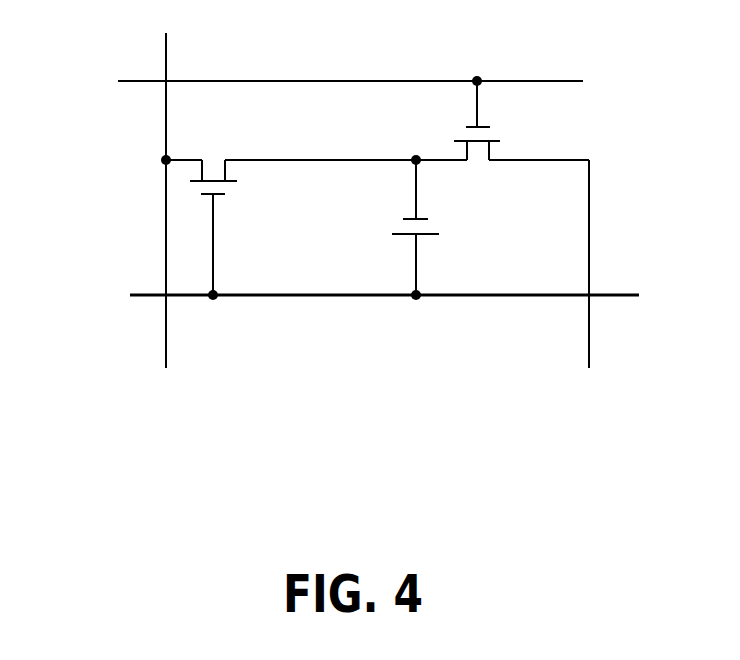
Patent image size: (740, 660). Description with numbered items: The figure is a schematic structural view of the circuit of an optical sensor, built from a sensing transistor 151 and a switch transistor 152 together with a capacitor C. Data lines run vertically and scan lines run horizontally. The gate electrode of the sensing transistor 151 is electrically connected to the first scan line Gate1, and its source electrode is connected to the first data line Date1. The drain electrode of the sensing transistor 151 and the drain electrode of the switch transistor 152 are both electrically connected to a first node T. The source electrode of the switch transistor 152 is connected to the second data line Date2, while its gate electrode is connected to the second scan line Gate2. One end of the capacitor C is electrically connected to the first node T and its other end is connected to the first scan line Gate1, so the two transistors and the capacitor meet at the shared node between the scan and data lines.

The sensing transistor 151 is at (240, 215).
The switch transistor 152 is at (528, 128).
The capacitor C is at (403, 228).
The first node T is at (415, 147).
The first scan line Gate1 is at (349, 296).
The second scan line Gate2 is at (318, 81).
The first data line Date1 is at (175, 221).
The second data line Date2 is at (597, 287).